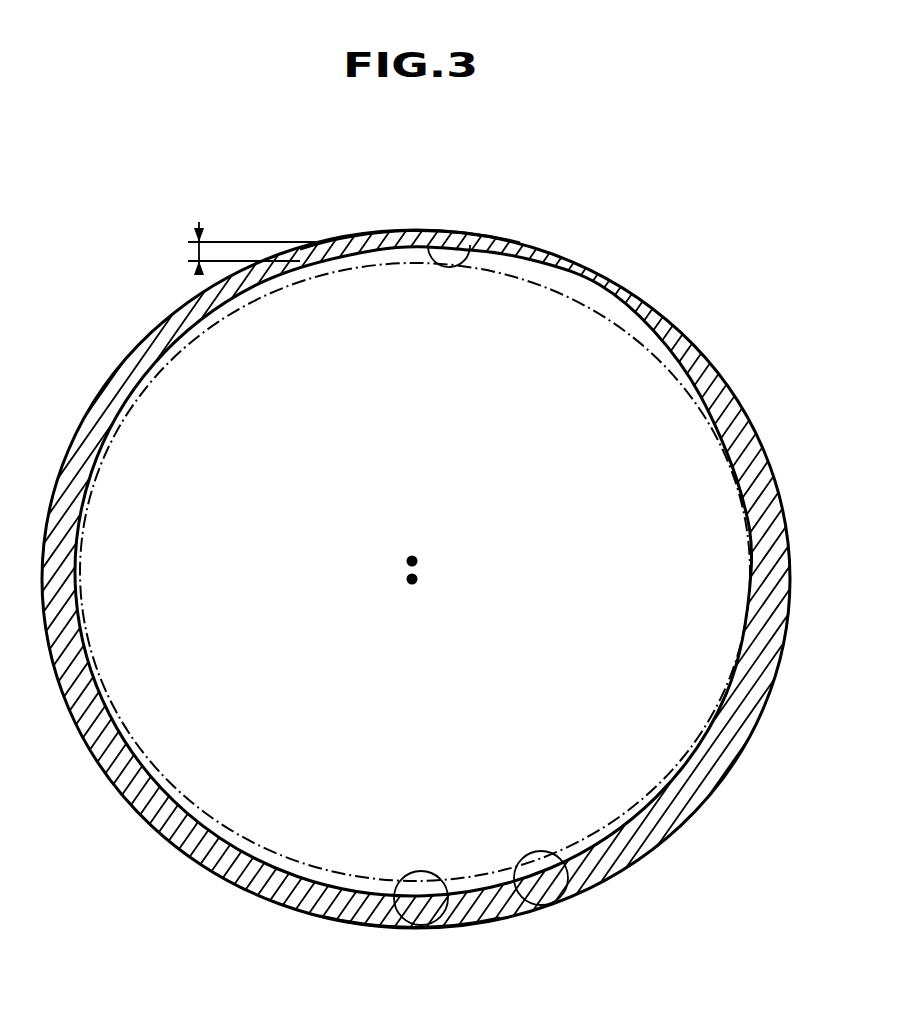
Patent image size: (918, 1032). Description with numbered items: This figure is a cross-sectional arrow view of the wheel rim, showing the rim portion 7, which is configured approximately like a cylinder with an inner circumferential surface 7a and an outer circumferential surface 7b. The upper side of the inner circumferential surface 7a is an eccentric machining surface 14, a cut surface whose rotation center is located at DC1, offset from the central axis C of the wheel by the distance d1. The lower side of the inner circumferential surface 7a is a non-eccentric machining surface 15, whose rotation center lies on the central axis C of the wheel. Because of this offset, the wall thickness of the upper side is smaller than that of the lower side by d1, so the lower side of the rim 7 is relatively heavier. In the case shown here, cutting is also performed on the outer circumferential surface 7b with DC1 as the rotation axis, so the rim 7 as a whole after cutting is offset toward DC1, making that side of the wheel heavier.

The rim portion 7 is at (540, 242).
The inner circumferential surface 7a is at (411, 928).
The outer circumferential surface 7b is at (403, 230).
The eccentric machining surface 14 is at (466, 234).
The non-eccentric machining surface 15 is at (490, 272).
The central axis (rotation center of eccentric machining) DC1 is at (416, 559).
The central axis of the wheel C is at (416, 581).
The offset distance d1 is at (238, 248).